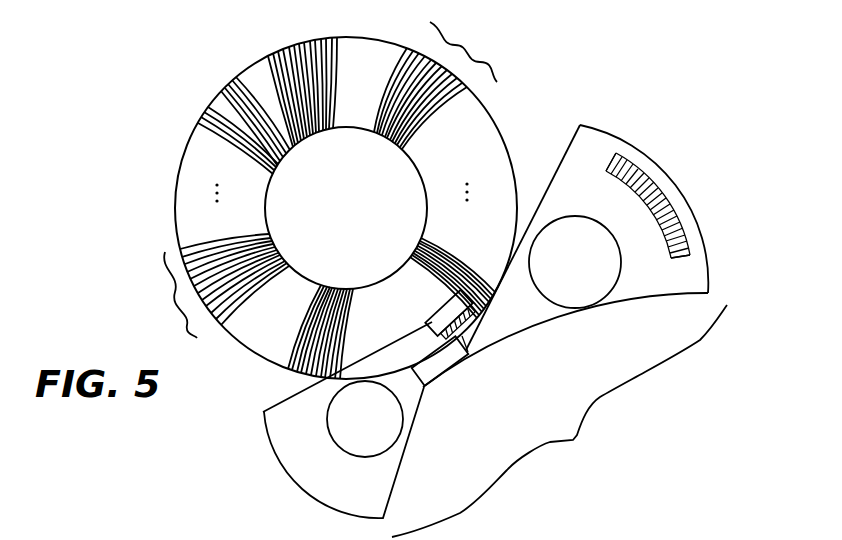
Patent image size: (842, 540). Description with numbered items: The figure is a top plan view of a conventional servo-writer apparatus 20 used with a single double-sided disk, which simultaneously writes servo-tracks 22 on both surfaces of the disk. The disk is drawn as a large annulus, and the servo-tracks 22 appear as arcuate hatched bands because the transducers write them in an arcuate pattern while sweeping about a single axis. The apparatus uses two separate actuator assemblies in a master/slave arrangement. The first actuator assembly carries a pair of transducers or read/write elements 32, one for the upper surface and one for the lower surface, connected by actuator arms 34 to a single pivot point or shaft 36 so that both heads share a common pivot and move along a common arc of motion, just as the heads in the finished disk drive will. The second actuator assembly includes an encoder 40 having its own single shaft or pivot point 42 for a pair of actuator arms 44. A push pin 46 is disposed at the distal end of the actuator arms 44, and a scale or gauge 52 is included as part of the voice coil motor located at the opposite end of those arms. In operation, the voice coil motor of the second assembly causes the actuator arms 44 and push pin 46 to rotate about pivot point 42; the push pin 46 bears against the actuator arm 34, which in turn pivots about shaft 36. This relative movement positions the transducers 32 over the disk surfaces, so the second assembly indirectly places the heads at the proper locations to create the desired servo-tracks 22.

The servo-writer apparatus 20 is at (559, 421).
The servo-tracks 22 is at (323, 195).
The transducers 32 is at (442, 325).
The actuator arms 34 is at (406, 396).
The pivot point or shaft 36 is at (380, 436).
The encoder 40 is at (565, 262).
The pivot point 42 is at (590, 283).
The actuator arms 44 is at (530, 317).
The push pin 46 is at (445, 368).
The scale or gauge 52 is at (653, 190).